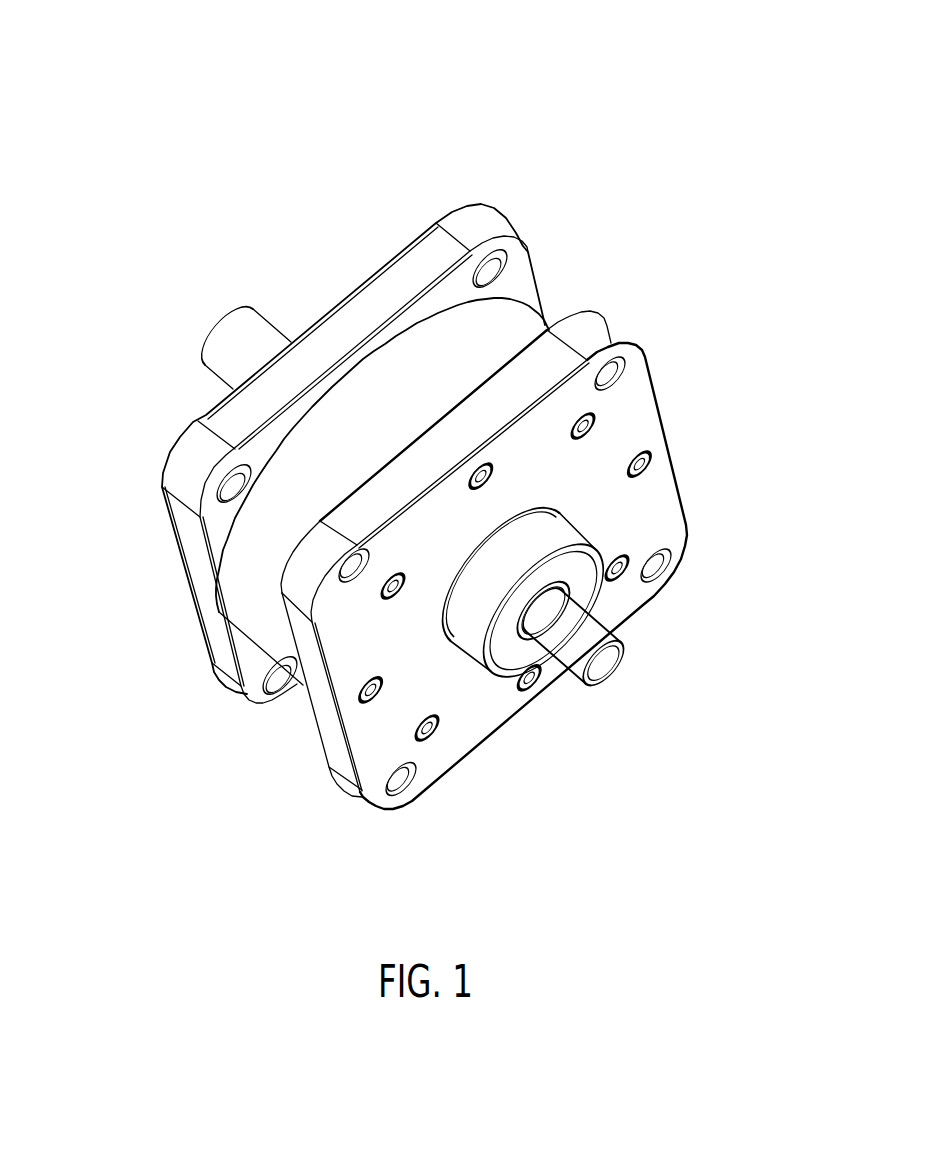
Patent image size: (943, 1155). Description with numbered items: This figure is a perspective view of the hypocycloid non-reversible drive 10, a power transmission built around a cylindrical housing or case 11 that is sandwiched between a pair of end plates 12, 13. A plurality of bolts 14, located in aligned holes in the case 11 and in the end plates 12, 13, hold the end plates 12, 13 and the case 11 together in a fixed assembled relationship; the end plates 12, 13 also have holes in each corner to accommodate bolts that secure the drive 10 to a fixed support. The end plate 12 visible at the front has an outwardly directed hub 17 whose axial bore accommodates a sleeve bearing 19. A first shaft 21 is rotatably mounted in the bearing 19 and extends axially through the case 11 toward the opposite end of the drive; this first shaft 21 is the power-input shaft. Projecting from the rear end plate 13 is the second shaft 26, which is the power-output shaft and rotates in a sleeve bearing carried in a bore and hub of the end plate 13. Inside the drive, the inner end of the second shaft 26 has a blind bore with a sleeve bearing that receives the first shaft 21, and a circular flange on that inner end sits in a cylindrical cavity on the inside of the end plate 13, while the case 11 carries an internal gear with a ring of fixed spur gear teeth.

The hypocycloid non-reversible drive 10 is at (437, 528).
The cylindrical housing or case 11 is at (507, 364).
The end plate 12 is at (379, 661).
The end plate 13 is at (308, 533).
The bolts 14 is at (581, 484).
The hub 17 is at (619, 570).
The sleeve bearing 19 is at (660, 620).
The first shaft 21 is at (664, 791).
The second shaft 26 is at (179, 309).